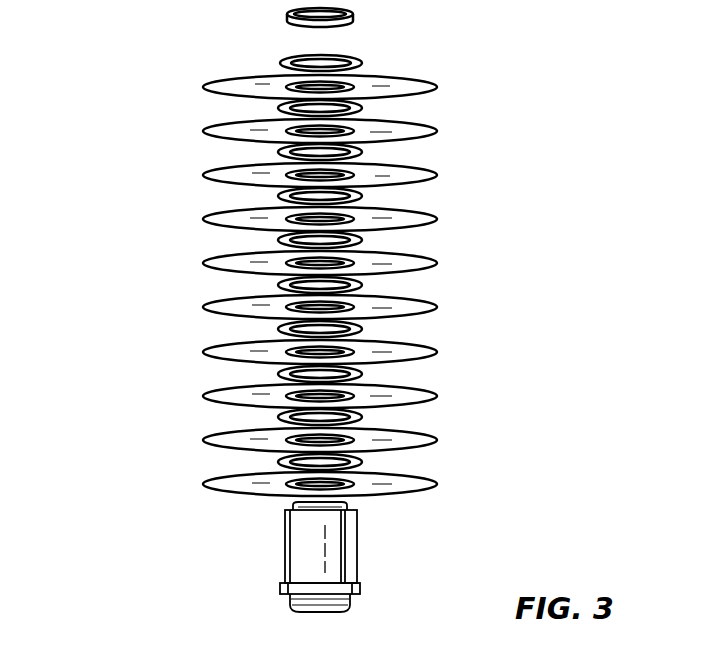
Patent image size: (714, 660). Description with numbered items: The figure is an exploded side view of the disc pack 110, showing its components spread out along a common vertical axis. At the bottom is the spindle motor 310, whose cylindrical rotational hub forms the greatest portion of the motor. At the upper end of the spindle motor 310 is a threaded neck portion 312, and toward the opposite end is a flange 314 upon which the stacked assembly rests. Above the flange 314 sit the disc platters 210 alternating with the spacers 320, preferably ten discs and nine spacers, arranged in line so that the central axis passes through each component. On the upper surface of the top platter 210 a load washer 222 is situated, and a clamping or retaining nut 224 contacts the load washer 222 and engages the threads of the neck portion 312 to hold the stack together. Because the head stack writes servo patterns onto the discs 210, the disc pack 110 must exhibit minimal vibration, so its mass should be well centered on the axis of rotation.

The disc pack 110 is at (497, 157).
The disc platters 210 is at (207, 87).
The load washer 222 is at (360, 57).
The clamping nut 224 is at (287, 15).
The spindle motor 310 is at (335, 548).
The threaded neck portion 312 is at (292, 522).
The flange 314 is at (302, 587).
The spacers 320 is at (364, 329).